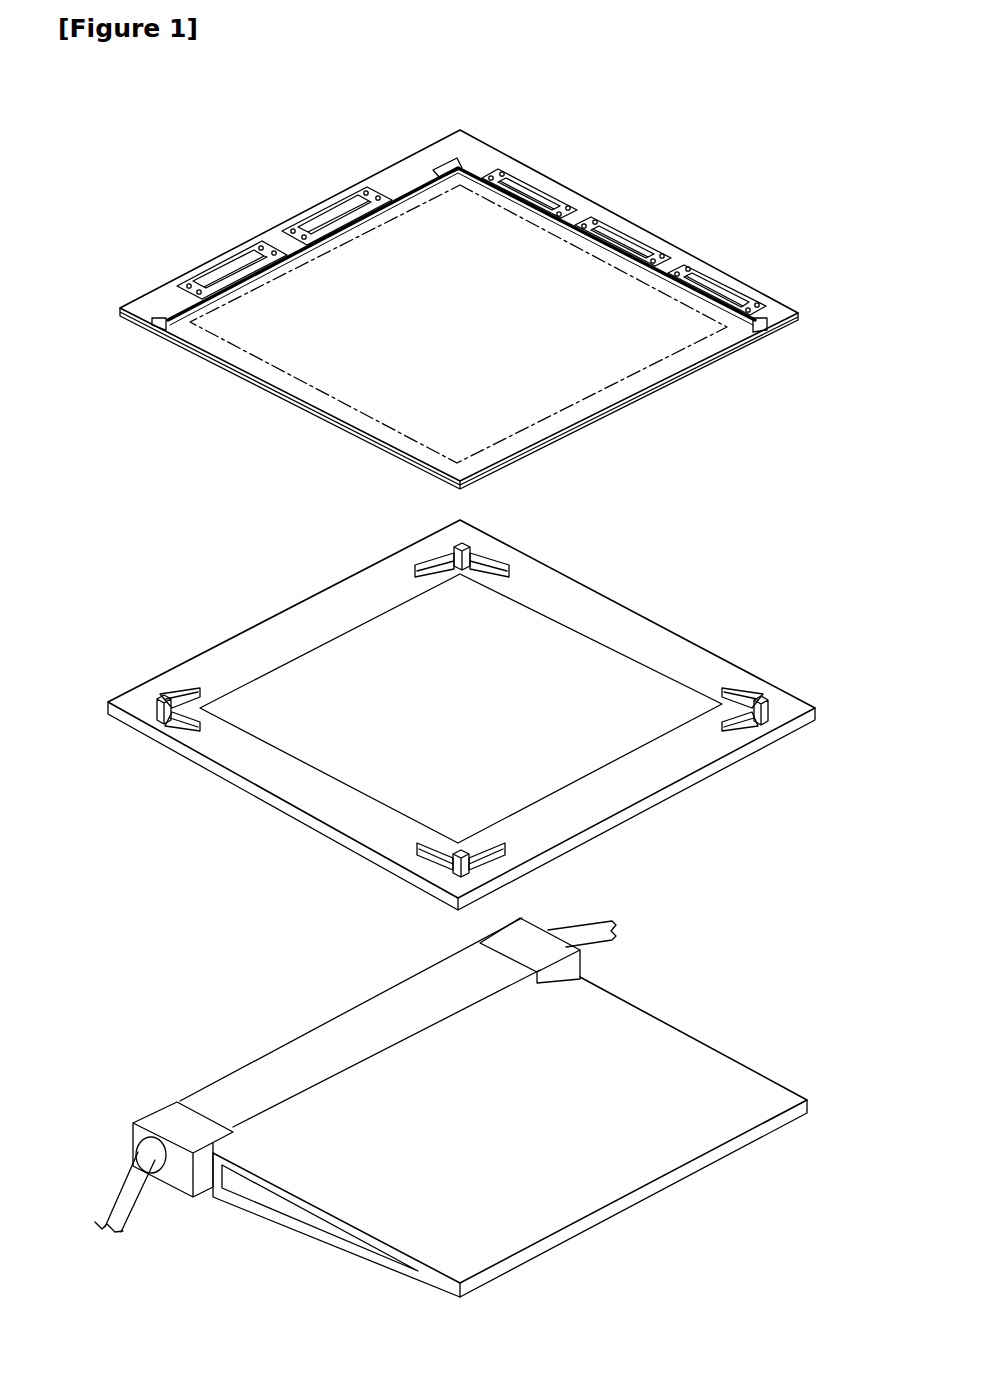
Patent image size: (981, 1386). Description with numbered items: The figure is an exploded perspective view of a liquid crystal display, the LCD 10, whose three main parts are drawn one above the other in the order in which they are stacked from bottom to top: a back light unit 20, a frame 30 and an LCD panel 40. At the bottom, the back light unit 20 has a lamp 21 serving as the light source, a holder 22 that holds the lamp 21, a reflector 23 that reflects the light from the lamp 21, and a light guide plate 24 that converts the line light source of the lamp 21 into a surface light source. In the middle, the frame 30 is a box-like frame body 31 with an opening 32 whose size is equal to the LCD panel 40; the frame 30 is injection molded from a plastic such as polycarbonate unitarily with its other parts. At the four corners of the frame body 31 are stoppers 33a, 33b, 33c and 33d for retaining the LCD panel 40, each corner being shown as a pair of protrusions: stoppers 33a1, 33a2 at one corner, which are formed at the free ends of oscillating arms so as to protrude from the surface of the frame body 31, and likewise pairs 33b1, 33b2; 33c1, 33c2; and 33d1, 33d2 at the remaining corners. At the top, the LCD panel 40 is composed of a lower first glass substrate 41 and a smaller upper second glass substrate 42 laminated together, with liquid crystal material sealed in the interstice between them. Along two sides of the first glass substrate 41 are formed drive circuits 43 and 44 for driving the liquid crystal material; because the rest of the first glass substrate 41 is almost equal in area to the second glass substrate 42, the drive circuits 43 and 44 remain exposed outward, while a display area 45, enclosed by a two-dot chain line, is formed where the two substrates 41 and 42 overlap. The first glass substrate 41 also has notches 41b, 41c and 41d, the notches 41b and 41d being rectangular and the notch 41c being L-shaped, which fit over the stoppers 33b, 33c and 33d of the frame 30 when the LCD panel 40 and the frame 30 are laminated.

The LCD 10 is at (775, 233).
The back light unit 20 is at (691, 989).
The lamp 21 is at (140, 1148).
The holder 22 is at (157, 1112).
The reflector 23 is at (338, 1040).
The light guide plate 24 is at (700, 1066).
The frame 30 is at (631, 572).
The frame body 31 is at (680, 634).
The opening 32 is at (303, 680).
The stopper 33a is at (467, 933).
The stopper 33a1 is at (433, 876).
The stopper 33a2 is at (463, 880).
The stopper 33b is at (867, 806).
The clip block 33b1 is at (767, 724).
The clip wings 33b2 is at (773, 702).
The stopper 33c is at (440, 514).
The clip block 33c1 is at (463, 548).
The clip wings 33c2 is at (440, 552).
The stopper 33d is at (199, 801).
The clip block 33d1 is at (128, 704).
The clip wings 33d2 is at (157, 722).
The LCD panel 40 is at (551, 175).
The first glass substrate 41 is at (667, 390).
The notch 41b is at (768, 331).
The notch 41c is at (467, 163).
The notch 41d is at (152, 328).
The second glass substrate 42 is at (563, 432).
The drive circuit 43 is at (640, 237).
The drive circuit 44 is at (273, 237).
The display area 45 is at (348, 388).